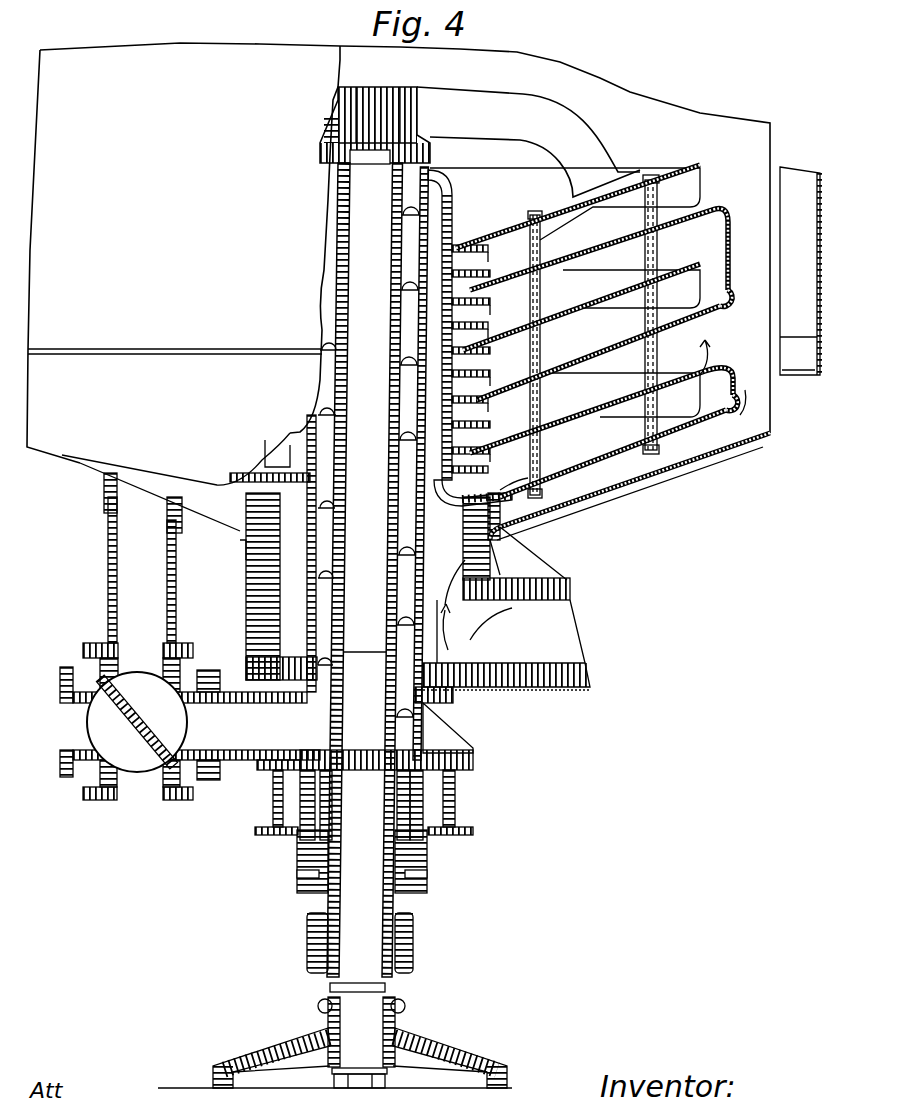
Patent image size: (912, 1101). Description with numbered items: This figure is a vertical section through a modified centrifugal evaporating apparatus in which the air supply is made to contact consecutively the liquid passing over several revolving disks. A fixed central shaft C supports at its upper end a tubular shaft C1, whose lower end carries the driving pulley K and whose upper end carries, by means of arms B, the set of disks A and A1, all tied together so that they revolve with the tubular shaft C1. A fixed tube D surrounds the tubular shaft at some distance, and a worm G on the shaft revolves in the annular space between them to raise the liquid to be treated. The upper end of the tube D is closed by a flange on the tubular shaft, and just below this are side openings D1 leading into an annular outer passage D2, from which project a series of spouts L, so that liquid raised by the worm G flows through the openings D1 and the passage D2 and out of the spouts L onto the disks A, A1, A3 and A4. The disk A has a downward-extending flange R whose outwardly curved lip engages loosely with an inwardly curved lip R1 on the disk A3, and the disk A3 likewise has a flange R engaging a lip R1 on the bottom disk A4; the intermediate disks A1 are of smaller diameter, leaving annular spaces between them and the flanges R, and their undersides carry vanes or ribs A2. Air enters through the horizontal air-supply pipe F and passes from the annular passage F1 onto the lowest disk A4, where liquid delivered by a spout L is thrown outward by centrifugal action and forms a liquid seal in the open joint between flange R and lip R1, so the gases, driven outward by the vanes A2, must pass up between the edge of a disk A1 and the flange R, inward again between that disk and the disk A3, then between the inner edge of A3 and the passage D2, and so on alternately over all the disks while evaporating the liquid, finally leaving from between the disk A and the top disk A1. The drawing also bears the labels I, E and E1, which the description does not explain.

The drum or boiler shell I is at (183, 288).
The arms B is at (528, 142).
The fixed central shaft C is at (365, 577).
The tubular shaft C1 is at (320, 350).
The fixed tube D is at (556, 463).
The side openings D1 is at (432, 193).
The annular outer passage D2 is at (446, 450).
The pipe with valve E is at (245, 738).
The branch pipe E1 is at (140, 600).
The air-supply pipe F is at (542, 646).
The annular passage F1 is at (273, 553).
The worm G is at (332, 752).
The driving-pulley K is at (445, 950).
The spouts L is at (477, 359).
The disk A is at (574, 291).
The intermediate disks A1 is at (510, 235).
The vanes or ribs A2 is at (628, 225).
The disk A3 is at (575, 391).
The bottom disk A4 is at (548, 485).
The downward-extending flange R is at (609, 299).
The inwardly-curved lip R1 is at (737, 296).